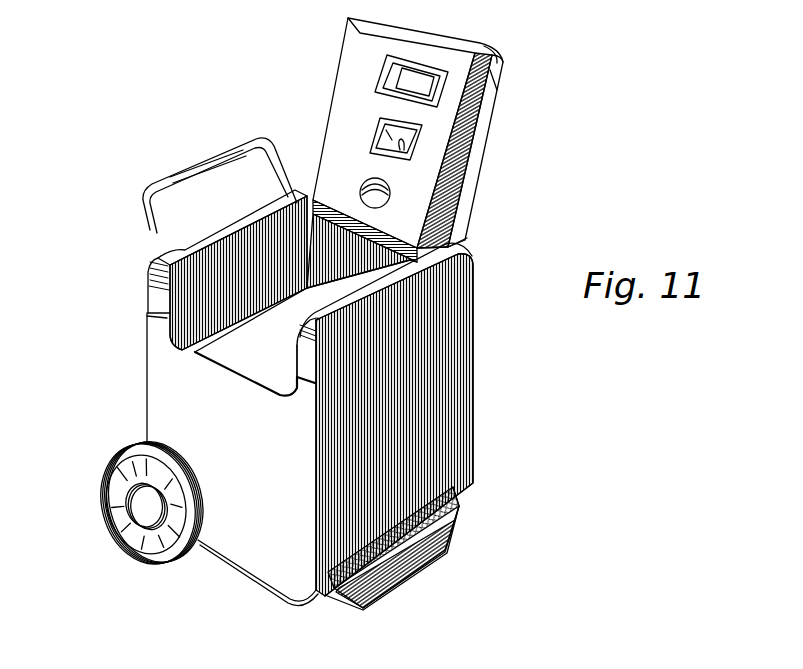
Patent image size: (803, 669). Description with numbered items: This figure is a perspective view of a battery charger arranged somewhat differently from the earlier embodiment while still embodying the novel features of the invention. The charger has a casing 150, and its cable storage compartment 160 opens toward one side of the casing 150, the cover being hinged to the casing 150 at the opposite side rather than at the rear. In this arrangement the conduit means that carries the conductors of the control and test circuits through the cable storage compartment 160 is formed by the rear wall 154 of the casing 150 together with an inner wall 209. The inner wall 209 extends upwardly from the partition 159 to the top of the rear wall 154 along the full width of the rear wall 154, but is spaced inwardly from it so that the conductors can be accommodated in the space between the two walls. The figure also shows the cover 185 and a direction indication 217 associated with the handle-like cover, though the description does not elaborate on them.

The casing 150 is at (483, 397).
The rear wall 154 is at (240, 217).
The partition 159 is at (263, 378).
The cable storage compartment 160 is at (224, 357).
The lid / cover panel 185 is at (458, 156).
The inner wall 209 is at (205, 300).
The handle pivot direction 217 is at (147, 228).